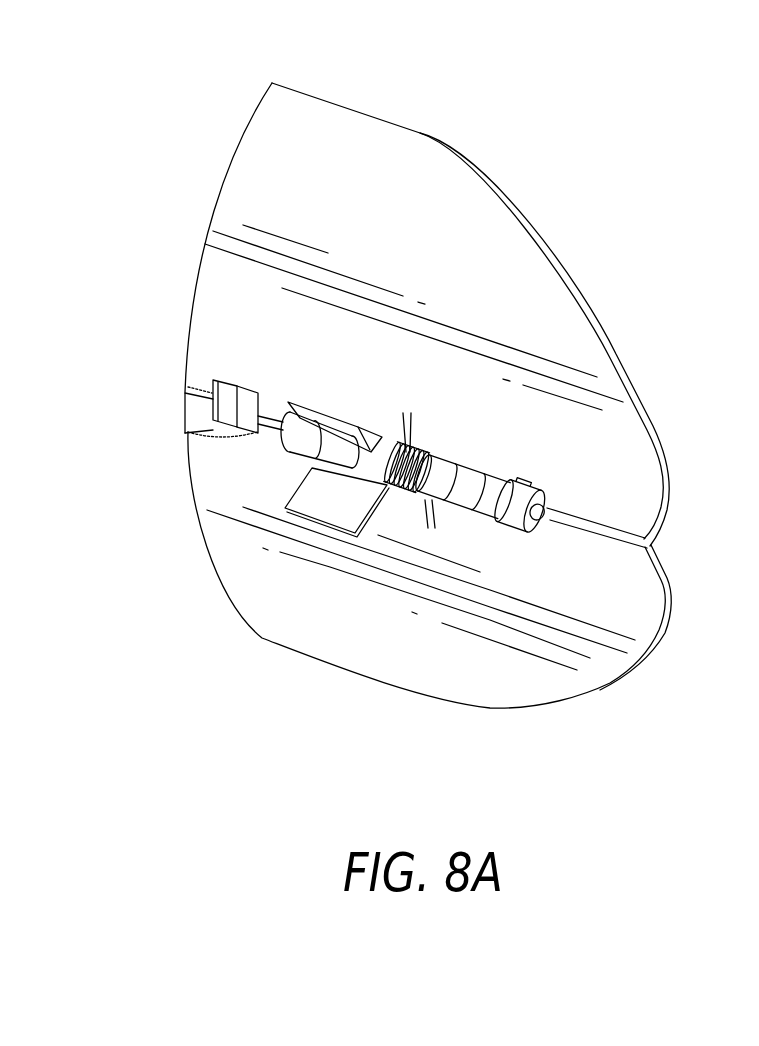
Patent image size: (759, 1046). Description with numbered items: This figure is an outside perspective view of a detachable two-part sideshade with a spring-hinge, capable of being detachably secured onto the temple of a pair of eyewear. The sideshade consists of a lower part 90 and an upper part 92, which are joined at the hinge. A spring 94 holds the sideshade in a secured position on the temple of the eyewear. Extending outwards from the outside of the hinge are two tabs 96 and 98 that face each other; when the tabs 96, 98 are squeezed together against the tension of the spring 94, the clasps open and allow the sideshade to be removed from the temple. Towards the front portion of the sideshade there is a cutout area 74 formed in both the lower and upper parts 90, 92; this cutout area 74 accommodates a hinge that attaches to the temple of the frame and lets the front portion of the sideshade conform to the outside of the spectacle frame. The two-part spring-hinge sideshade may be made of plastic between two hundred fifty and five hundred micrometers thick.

The cutout area 74 is at (187, 433).
The lower part 90 is at (387, 653).
The upper part 92 is at (390, 172).
The spring 94 is at (417, 440).
The tab 96 is at (305, 497).
The tab 98 is at (307, 400).